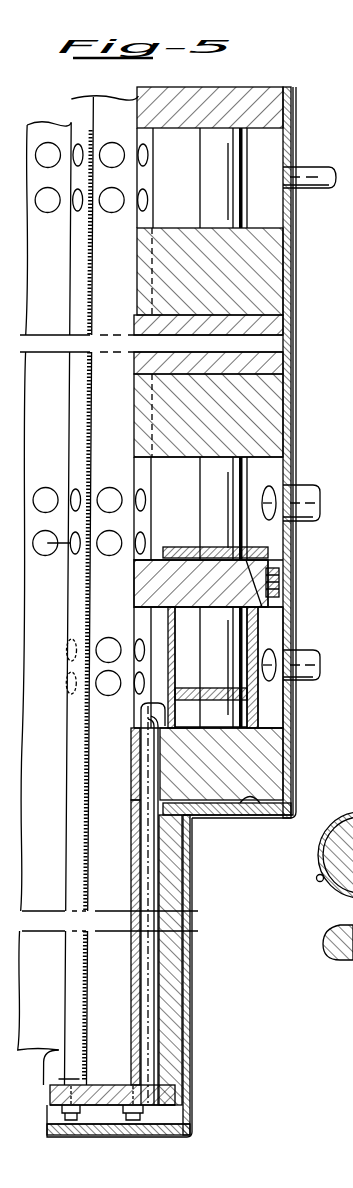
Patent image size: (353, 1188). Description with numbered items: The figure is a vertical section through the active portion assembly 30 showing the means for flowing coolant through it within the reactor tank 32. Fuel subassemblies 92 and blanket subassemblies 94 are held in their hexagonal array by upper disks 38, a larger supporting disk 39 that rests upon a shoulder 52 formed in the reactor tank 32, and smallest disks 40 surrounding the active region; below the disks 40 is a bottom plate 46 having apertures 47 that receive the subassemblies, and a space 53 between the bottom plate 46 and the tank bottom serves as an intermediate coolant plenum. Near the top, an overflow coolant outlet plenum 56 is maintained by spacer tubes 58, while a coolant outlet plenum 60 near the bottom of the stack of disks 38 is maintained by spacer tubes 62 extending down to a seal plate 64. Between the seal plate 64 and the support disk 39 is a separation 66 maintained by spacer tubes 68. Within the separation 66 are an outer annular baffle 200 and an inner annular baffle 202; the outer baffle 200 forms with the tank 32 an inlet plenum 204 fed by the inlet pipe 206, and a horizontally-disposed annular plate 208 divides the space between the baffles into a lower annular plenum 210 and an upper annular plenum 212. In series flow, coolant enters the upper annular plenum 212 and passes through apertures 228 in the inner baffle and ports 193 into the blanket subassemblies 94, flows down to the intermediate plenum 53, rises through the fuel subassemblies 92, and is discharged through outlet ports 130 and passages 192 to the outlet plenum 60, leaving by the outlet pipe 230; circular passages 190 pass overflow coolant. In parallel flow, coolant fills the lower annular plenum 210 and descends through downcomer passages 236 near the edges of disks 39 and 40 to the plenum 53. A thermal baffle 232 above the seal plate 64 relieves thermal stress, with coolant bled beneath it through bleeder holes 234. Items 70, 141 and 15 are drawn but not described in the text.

The active portion assembly 30 is at (244, 86).
The reactor tank 32 is at (289, 288).
The upper disks 38 is at (270, 112).
The larger disk 39 is at (271, 758).
The smallest disks 40 is at (172, 864).
The bottom plate 46 is at (96, 1098).
The apertures 47 is at (58, 1094).
The shoulder 52 is at (266, 801).
The space 53 is at (165, 1118).
The overflow coolant outlet plenum 56 is at (271, 213).
The spacer tubes 58 is at (210, 171).
The coolant outlet plenum 60 is at (269, 473).
The spacer tubes 62 is at (208, 483).
The seal plate 64 is at (273, 571).
The separation 66 is at (271, 624).
The spacer tubes 68 is at (221, 726).
The screw 70 is at (281, 584).
The fuel subassemblies 92 is at (46, 120).
The blanket subassemblies 94 is at (100, 98).
The apertures 130 is at (76, 512).
The pin 141 is at (352, 909).
The circular passages 190 is at (143, 192).
The coolant passages 192 is at (76, 192).
The ports 193 is at (139, 688).
The outer annular baffle 200 is at (256, 713).
The inner annular baffle 202 is at (180, 606).
The inlet plenum 204 is at (259, 641).
The inlet pipe 206 is at (311, 663).
The annular plate 208 is at (241, 695).
The lower annular plenum 210 is at (188, 722).
The upper annular plenum 212 is at (188, 628).
The apertures 228 is at (176, 664).
The outlet pipe 230 is at (309, 497).
The thermal baffle 232 is at (270, 549).
The bleeder holes 234 is at (247, 573).
The downcomer passages 236 is at (152, 786).
The frame member 15 is at (345, 999).